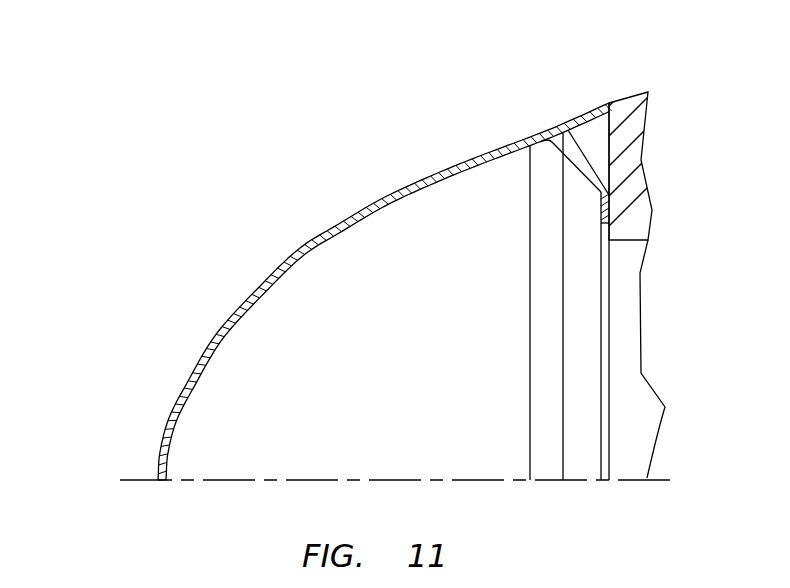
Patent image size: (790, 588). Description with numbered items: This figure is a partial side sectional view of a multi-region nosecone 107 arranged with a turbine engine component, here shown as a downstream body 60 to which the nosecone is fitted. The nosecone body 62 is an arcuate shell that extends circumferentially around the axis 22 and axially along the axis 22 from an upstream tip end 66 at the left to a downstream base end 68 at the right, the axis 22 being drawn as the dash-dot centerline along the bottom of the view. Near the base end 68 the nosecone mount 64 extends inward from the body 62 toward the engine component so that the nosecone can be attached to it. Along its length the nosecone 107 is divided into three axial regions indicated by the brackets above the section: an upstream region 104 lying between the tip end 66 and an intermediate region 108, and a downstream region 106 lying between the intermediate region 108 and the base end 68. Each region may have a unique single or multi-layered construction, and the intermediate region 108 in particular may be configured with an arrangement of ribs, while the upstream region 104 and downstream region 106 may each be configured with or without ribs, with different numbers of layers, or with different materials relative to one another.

The axis 22 is at (668, 480).
The hub body 60 is at (641, 160).
The nosecone body 62 is at (342, 234).
The nosecone mount 64 is at (577, 174).
The upstream tip end 66 is at (157, 480).
The downstream base end 68 is at (609, 104).
The upstream region 104 is at (267, 80).
The downstream region 106 is at (443, 80).
The nosecone 107 is at (110, 128).
The intermediate region 108 is at (267, 80).